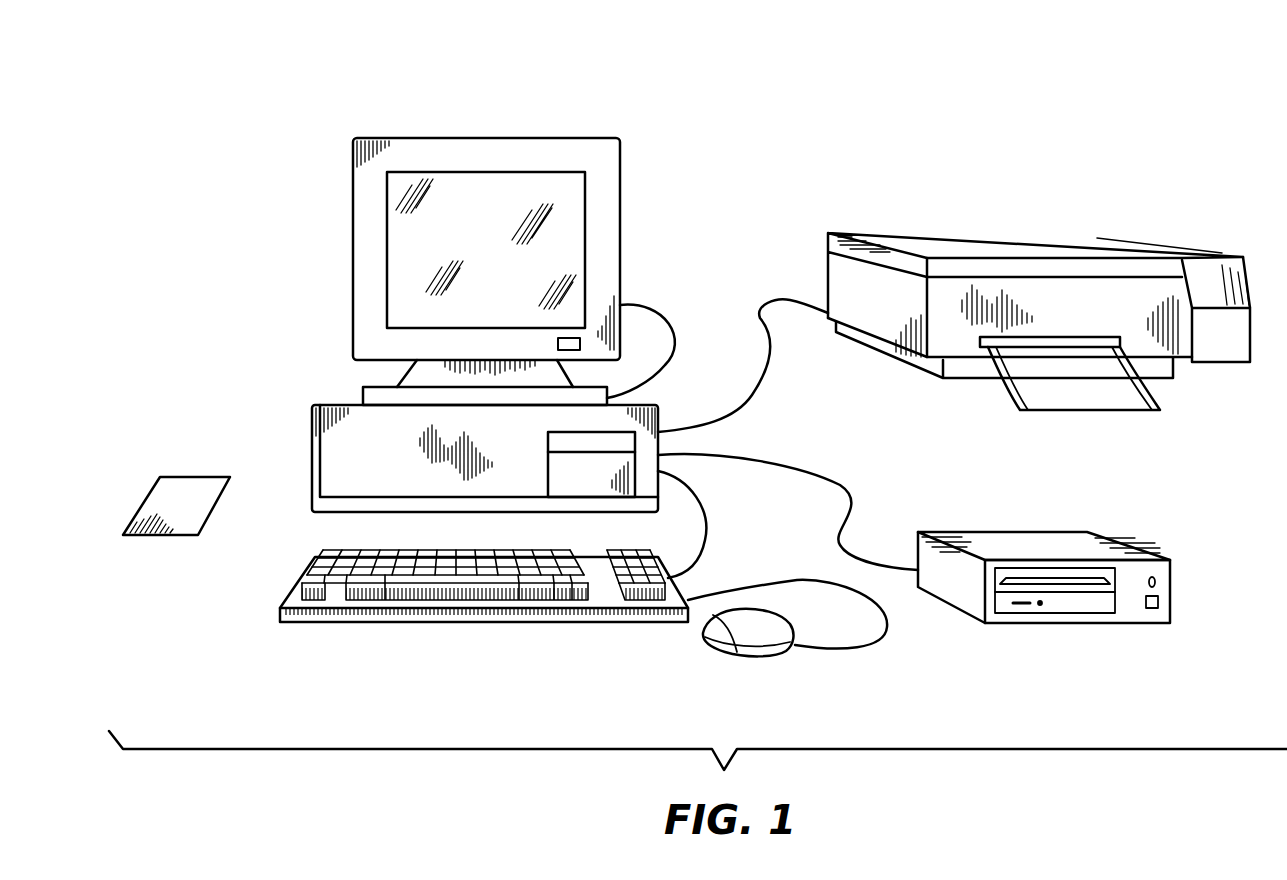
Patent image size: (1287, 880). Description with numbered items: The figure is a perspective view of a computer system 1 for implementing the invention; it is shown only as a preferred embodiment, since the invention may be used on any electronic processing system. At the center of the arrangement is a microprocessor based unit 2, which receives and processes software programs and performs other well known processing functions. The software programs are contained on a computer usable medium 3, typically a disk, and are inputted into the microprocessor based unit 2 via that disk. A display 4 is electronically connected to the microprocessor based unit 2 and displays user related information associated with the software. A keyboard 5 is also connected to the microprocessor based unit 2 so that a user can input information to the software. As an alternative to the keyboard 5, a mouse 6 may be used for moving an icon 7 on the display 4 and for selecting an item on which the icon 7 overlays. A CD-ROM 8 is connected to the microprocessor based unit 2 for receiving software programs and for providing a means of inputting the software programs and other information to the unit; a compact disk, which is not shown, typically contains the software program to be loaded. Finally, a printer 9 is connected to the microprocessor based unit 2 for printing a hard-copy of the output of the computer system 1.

The computer system 1 is at (802, 141).
The microprocessor based unit 2 is at (322, 405).
The computer usable medium 3 is at (199, 483).
The display 4 is at (497, 138).
The keyboard 5 is at (378, 625).
The mouse 6 is at (740, 640).
The icon 7 is at (570, 247).
The CD-ROM 8 is at (995, 532).
The printer 9 is at (988, 233).